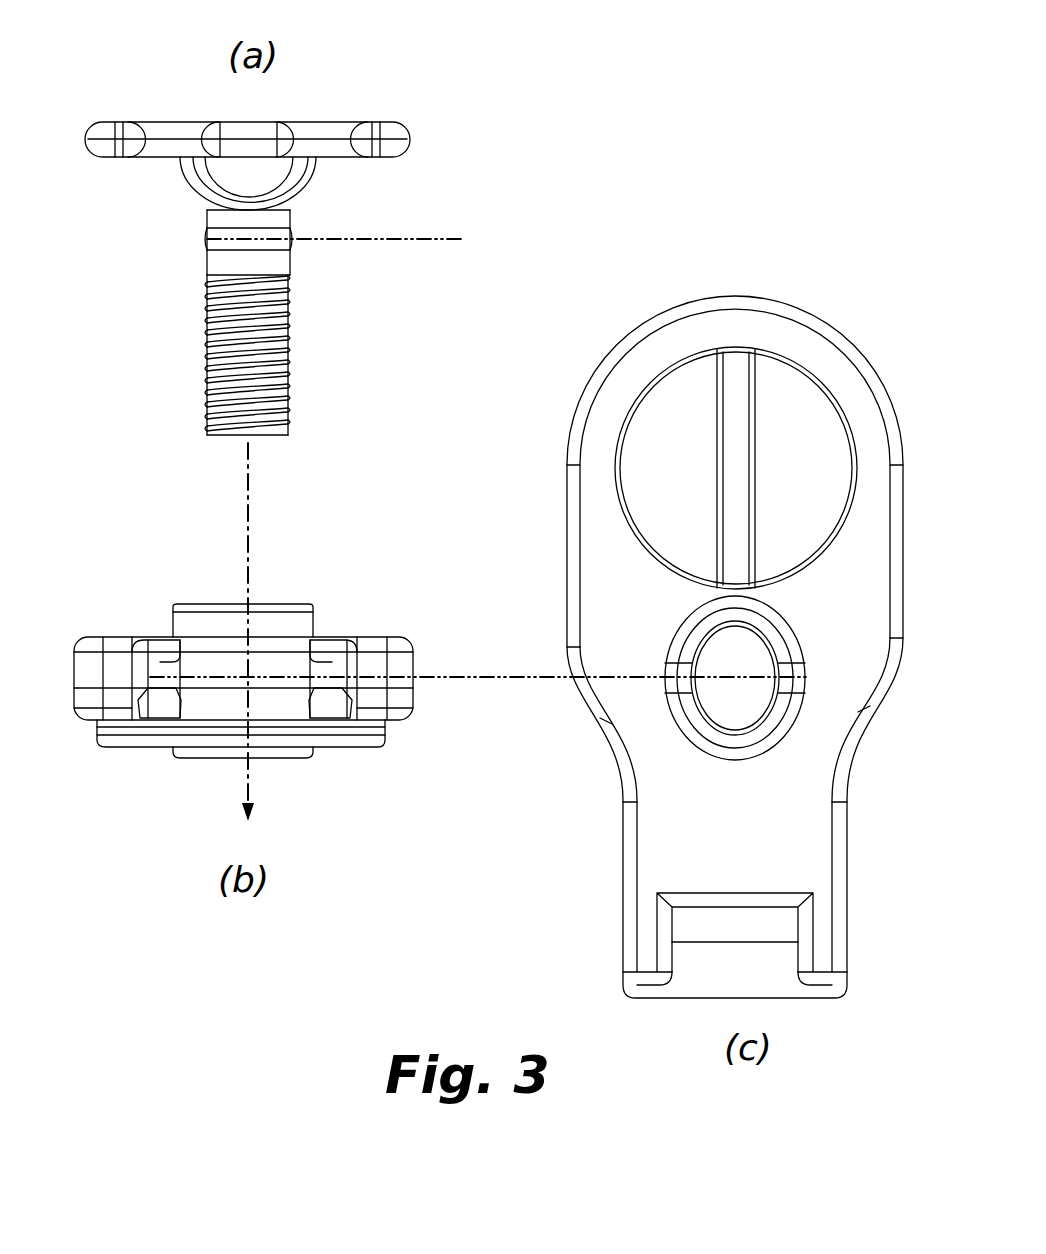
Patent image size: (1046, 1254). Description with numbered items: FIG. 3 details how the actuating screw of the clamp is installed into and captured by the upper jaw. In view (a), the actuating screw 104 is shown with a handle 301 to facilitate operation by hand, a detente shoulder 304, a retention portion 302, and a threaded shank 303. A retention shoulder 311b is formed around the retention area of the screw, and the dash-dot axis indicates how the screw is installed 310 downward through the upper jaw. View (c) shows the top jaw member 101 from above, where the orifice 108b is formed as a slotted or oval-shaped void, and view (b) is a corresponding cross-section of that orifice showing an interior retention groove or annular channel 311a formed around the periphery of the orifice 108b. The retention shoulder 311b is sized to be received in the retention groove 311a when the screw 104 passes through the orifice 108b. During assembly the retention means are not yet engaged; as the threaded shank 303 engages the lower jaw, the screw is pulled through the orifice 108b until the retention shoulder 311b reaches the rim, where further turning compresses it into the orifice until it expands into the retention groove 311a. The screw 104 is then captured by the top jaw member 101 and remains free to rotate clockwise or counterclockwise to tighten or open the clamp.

The actuating screw 104 is at (456, 89).
The handle 301 is at (80, 147).
The detente shoulder 304 is at (178, 173).
The retention portion 302 is at (195, 237).
The threaded shank 303 is at (205, 432).
The installation of actuating screw 310 is at (272, 632).
The retention groove 311a is at (480, 664).
The retention shoulder 311b is at (374, 239).
The top jaw member 101 is at (412, 730).
The orifice 108b is at (662, 622).